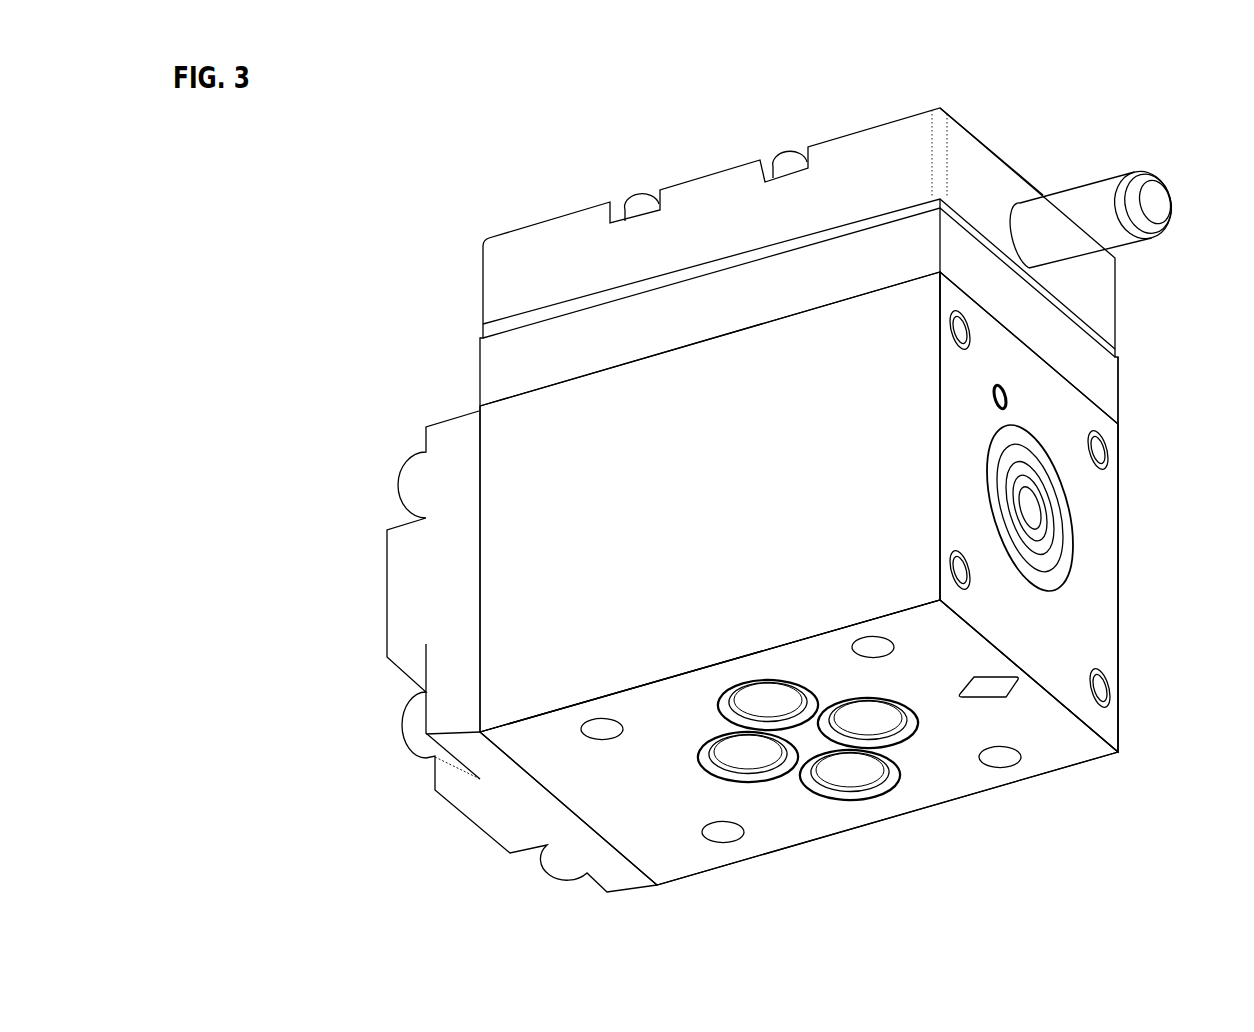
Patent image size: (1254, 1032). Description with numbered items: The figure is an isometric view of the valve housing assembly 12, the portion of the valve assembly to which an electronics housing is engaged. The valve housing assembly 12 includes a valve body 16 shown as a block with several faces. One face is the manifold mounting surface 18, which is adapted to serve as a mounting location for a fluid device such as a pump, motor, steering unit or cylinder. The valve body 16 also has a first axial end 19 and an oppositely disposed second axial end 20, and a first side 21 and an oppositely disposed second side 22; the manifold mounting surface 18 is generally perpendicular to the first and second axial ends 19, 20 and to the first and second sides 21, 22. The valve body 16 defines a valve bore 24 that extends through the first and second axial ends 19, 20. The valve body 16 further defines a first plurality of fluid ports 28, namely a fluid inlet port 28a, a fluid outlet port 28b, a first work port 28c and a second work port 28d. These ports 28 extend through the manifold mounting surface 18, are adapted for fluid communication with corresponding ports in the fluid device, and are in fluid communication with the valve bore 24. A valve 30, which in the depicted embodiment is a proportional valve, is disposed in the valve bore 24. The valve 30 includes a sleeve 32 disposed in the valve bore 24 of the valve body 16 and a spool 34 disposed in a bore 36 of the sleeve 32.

The valve housing assembly 12 is at (410, 243).
The valve body 16 is at (497, 452).
The manifold mounting surface 18 is at (610, 780).
The first axial end 19 is at (1041, 640).
The second axial end 20 is at (481, 558).
The first side 21 is at (727, 603).
The second side 22 is at (1120, 553).
The valve bore 24 is at (1028, 462).
The first plurality of fluid ports 28 is at (703, 722).
The fluid inlet port 28a is at (787, 682).
The fluid outlet port 28b is at (818, 793).
The first work port 28c is at (717, 777).
The second work port 28d is at (880, 705).
The valve 30 is at (988, 483).
The sleeve 32 is at (998, 510).
The spool 34 is at (1033, 505).
The bore 36 is at (1040, 527).